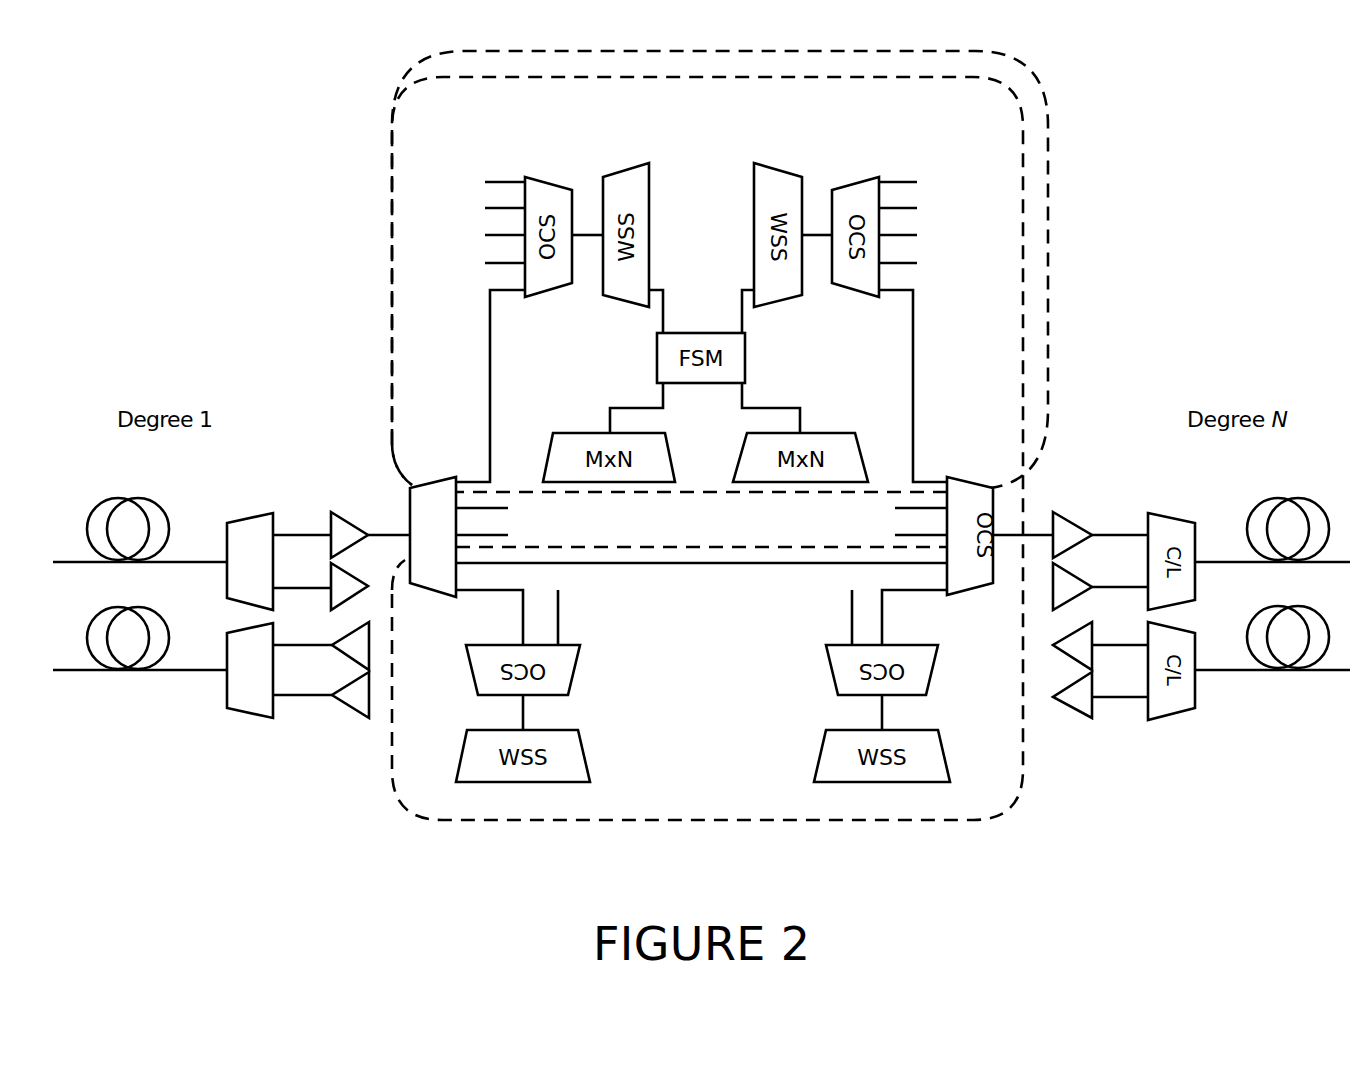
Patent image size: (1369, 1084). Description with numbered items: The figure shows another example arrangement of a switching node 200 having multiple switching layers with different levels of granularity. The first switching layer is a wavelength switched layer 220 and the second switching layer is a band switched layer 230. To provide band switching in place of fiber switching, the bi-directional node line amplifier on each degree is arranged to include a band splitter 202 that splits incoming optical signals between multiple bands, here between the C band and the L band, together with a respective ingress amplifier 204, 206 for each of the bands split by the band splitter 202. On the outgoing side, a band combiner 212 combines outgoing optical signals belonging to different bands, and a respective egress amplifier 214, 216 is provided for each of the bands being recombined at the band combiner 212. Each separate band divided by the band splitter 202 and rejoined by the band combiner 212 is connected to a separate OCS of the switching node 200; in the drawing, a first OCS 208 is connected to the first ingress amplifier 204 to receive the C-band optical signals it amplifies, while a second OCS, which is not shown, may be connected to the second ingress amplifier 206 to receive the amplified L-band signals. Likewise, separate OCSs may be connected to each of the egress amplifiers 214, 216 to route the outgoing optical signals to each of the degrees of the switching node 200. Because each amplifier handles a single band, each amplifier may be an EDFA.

The switching node 200 is at (720, 868).
The band splitter 202 is at (257, 517).
The first ingress amplifier 204 is at (355, 538).
The second ingress amplifier 206 is at (337, 590).
The first OCS 208 is at (440, 487).
The band combiner 212 is at (250, 713).
The egress amplifier 214 is at (360, 645).
The egress amplifier 216 is at (358, 695).
The wavelength switched layer 220 is at (720, 271).
The band switched layer 230 is at (723, 681).